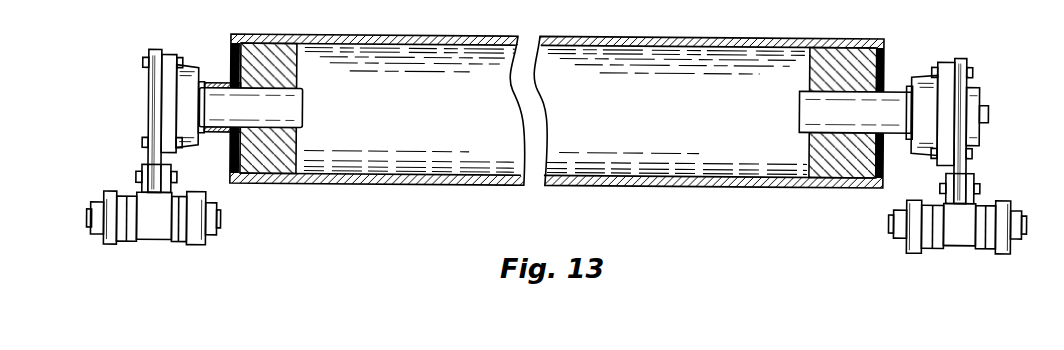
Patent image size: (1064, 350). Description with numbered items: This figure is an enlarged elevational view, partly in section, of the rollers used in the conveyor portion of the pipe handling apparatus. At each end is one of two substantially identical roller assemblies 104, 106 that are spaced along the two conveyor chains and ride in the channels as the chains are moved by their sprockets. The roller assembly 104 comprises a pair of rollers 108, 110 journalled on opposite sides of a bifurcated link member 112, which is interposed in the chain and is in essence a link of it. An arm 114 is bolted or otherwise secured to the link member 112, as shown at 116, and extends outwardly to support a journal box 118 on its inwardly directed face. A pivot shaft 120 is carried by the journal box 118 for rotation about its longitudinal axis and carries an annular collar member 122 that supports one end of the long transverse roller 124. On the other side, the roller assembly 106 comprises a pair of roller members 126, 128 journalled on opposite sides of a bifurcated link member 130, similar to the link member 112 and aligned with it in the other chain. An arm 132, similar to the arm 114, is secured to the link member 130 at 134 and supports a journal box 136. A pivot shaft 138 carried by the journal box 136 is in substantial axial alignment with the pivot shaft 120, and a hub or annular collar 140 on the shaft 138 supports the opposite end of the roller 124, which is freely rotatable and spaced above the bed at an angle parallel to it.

The roller assembly 104 is at (157, 242).
The roller assembly 106 is at (957, 242).
The roller 108 is at (116, 244).
The roller 110 is at (198, 243).
The bifurcated link member 112 is at (152, 208).
The arm 114 is at (149, 90).
The bolted connection 116 is at (179, 184).
The journal box 118 is at (188, 76).
The pivot shaft 120 is at (297, 104).
The annular collar member 122 is at (293, 36).
The roller 124 is at (276, 60).
The roller member 126 is at (915, 241).
The roller member 128 is at (1003, 238).
The bifurcated link member 130 is at (961, 207).
The arm 132 is at (963, 67).
The bolted connection 134 is at (978, 180).
The journal box 136 is at (922, 81).
The pivot shaft 138 is at (800, 112).
The annular collar 140 is at (838, 57).